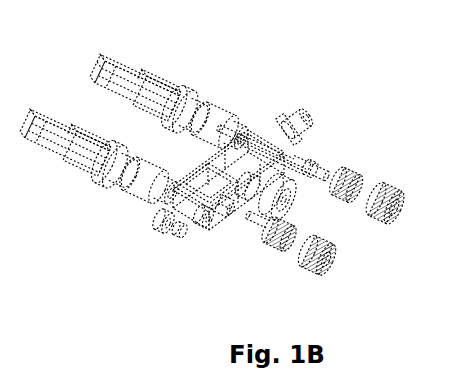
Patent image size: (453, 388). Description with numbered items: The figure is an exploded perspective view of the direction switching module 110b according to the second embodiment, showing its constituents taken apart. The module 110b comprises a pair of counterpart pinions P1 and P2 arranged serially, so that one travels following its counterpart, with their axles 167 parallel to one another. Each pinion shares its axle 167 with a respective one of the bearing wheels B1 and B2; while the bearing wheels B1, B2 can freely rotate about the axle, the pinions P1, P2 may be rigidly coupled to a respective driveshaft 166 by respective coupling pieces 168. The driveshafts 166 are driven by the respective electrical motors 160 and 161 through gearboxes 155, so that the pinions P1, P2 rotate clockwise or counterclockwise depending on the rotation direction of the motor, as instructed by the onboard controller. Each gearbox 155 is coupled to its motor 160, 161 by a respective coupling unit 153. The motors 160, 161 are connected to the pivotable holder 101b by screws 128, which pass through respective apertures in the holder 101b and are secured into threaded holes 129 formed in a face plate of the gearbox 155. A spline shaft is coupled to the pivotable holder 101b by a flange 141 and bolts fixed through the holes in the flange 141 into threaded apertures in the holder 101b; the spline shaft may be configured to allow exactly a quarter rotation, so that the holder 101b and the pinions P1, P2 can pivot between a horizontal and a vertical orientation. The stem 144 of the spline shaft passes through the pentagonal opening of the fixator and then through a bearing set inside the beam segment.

The electrical motor 160 is at (161, 82).
The coupling unit 153 is at (193, 95).
The electrical motor 161 is at (62, 145).
The gearbox 155 is at (132, 180).
The threaded hole 129 is at (151, 174).
The stem 144 is at (187, 155).
The driveshaft 166 is at (234, 134).
The axle 167 is at (314, 165).
The counterpart pinion P1 is at (354, 178).
The bearing wheel B1 is at (377, 218).
The bearing wheel B2 is at (317, 274).
The counterpart pinion P2 is at (270, 251).
The flange 141 is at (288, 186).
The coupling piece 168 is at (165, 223).
The screw 128 is at (197, 217).
The pivotable holder 101b is at (219, 217).
The direction switching module 110b is at (64, 267).